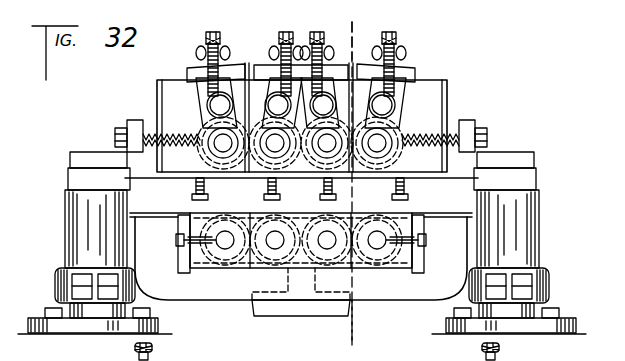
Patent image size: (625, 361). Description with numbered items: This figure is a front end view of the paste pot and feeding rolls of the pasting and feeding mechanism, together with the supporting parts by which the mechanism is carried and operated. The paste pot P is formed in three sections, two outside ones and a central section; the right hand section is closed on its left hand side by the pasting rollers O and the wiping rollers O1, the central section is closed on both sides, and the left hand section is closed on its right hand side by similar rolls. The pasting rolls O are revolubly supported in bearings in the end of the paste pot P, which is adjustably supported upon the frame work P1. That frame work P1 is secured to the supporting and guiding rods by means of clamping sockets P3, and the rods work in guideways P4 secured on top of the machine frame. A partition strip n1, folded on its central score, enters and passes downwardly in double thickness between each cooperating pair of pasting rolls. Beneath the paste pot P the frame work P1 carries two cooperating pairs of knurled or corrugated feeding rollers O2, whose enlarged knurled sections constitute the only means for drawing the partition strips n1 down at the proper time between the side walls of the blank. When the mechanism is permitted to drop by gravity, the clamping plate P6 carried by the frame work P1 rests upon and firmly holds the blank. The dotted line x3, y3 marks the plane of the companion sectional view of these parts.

The paste pot P is at (447, 88).
The frame work P1 is at (413, 297).
The clamping sockets P3 is at (67, 262).
The guideways P4 is at (118, 333).
The clamping plate P6 is at (326, 308).
The pasting rolls O is at (212, 145).
The wiping rollers O1 is at (209, 103).
The feeding rollers O2 is at (268, 222).
The partition strip n1 is at (351, 42).
The section line x3 is at (350, 174).
The section line y3 is at (357, 330).